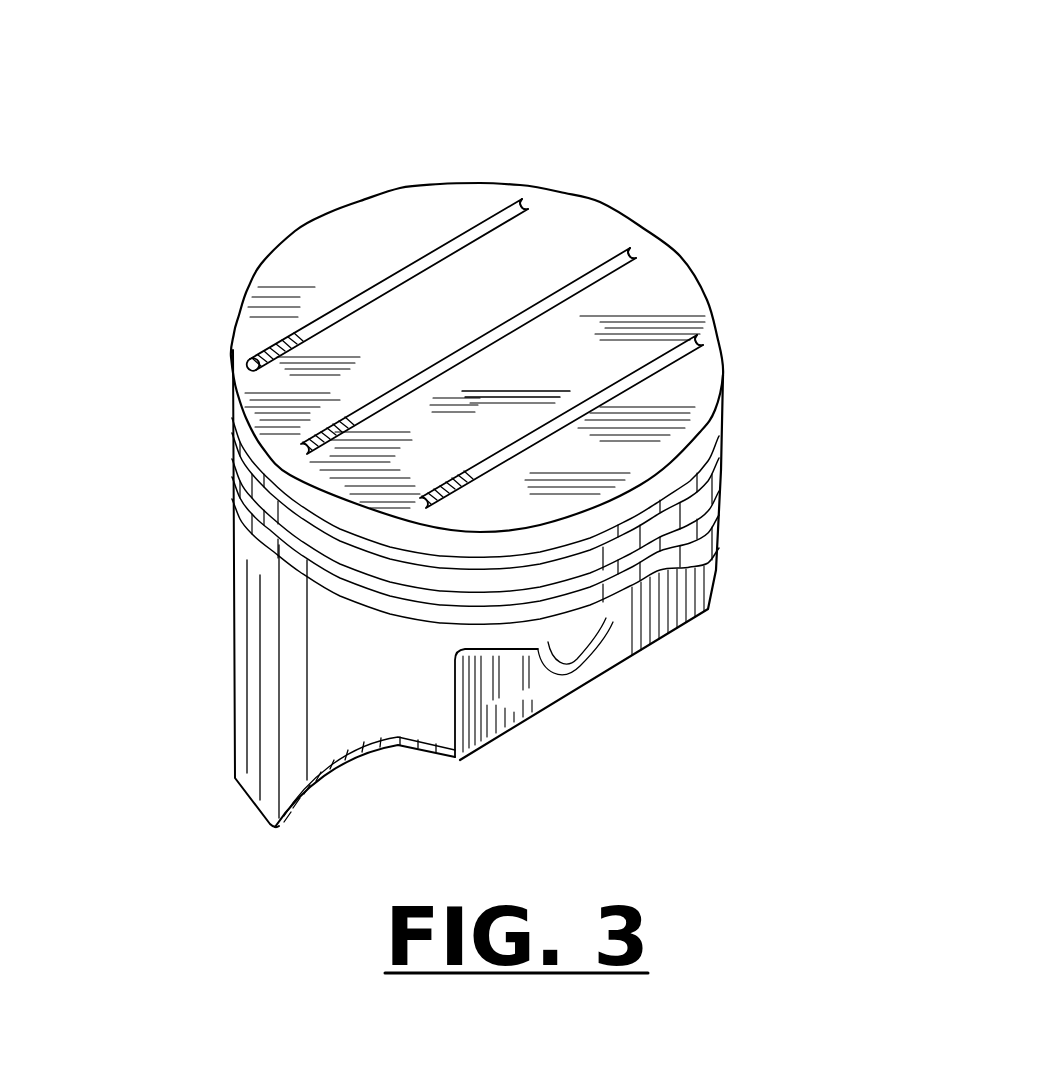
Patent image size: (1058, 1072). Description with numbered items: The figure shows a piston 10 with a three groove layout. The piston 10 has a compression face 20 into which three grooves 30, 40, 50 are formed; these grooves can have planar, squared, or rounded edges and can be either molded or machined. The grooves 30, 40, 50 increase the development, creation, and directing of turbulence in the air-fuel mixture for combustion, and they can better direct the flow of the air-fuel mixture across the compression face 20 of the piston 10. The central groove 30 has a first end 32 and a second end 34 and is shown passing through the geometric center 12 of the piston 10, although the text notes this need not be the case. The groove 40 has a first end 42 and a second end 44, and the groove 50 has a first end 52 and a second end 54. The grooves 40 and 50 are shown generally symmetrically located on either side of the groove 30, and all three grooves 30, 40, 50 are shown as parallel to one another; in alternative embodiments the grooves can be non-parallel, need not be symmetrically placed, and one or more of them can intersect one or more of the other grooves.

The piston 10 is at (703, 112).
The geometric center 12 is at (482, 343).
The compression face 20 is at (393, 224).
The groove 30 is at (548, 285).
The first end 32 is at (637, 248).
The second end 34 is at (233, 488).
The groove 40 is at (688, 304).
The first end 42 is at (719, 335).
The second end 44 is at (235, 580).
The groove 50 is at (457, 238).
The first end 52 is at (526, 201).
The second end 54 is at (230, 346).